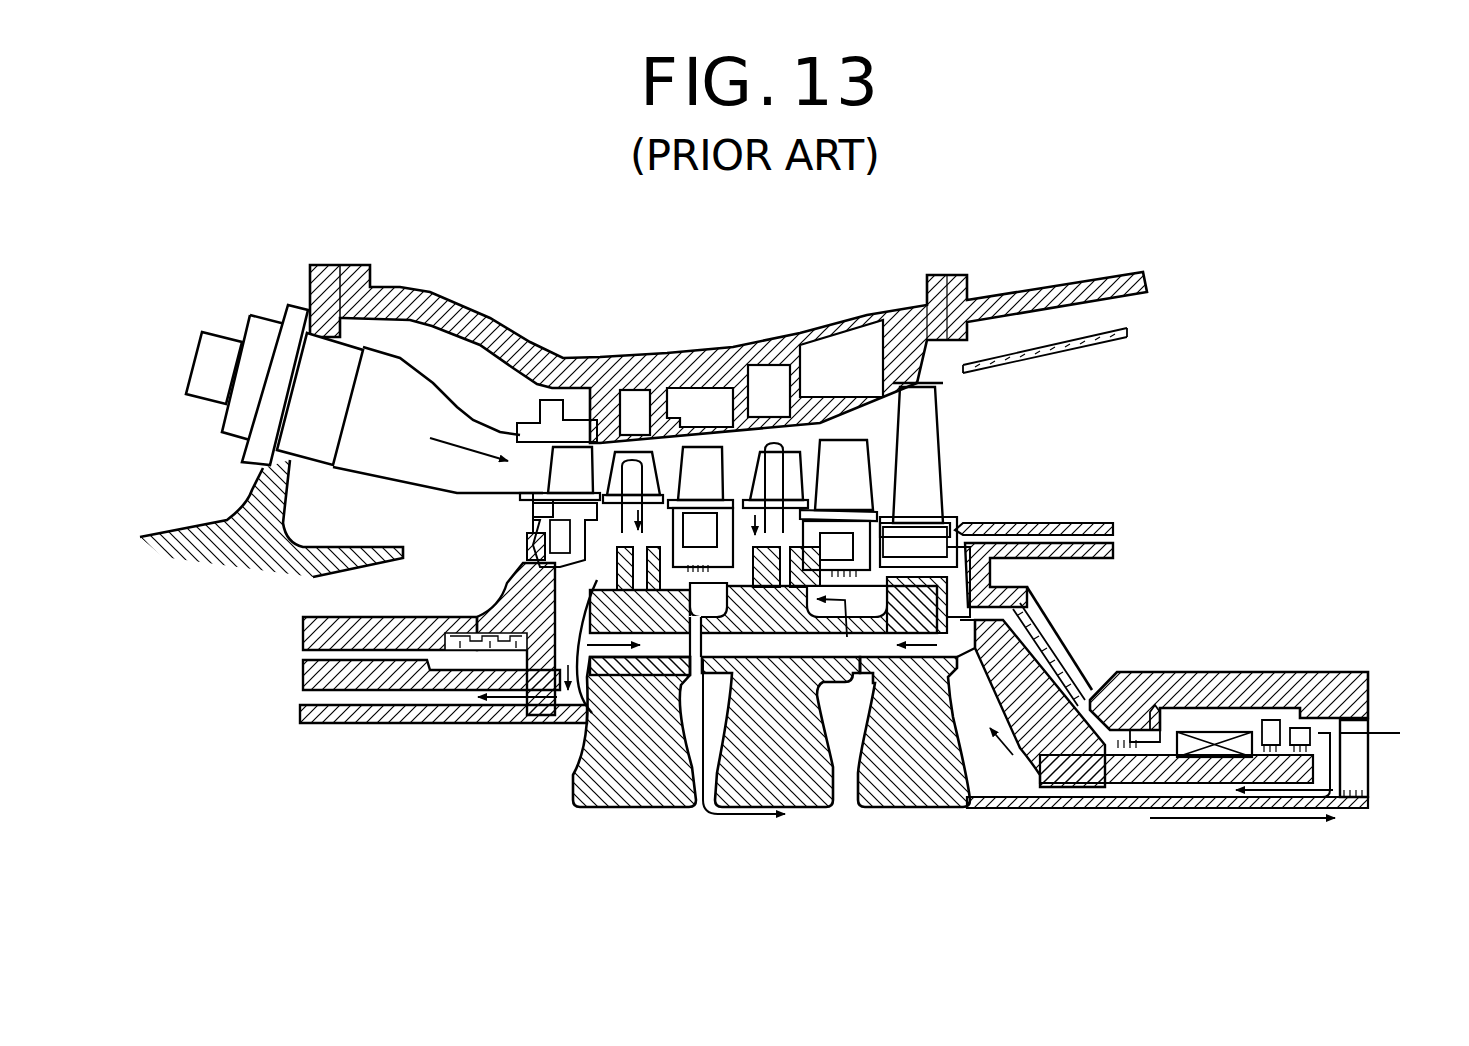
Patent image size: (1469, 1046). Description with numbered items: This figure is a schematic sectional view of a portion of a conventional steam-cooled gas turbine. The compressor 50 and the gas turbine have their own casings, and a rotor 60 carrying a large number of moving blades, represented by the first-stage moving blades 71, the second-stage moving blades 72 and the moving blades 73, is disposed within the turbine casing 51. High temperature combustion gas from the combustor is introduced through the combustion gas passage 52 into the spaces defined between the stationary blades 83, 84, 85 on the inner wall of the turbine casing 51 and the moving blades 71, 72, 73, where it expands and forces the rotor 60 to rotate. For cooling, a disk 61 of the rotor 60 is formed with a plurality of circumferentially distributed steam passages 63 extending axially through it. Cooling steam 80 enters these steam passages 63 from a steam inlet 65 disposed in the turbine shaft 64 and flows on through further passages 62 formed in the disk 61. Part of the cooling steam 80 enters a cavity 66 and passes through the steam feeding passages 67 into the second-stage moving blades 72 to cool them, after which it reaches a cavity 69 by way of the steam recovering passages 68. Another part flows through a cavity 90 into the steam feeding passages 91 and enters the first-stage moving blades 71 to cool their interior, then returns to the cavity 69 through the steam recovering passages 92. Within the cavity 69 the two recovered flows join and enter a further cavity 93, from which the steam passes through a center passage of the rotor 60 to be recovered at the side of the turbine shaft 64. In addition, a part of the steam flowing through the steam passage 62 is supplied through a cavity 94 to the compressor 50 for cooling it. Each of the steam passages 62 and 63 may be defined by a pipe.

The compressor casing 50 is at (188, 535).
The turbine casing 51 is at (414, 272).
The combustion gas passage 52 is at (447, 437).
The rotor 60 is at (550, 792).
The disk 61 is at (650, 778).
The steam passage 62 is at (763, 640).
The steam passage 63 is at (1105, 800).
The turbine shaft 64 is at (1262, 672).
The steam inlet 65 is at (1372, 720).
The cavity 66 is at (868, 610).
The steam feeding passage 67 is at (880, 510).
The steam recovering passage 68 is at (880, 490).
The cavity 69 is at (693, 597).
The first-stage moving blade 71 is at (624, 452).
The second-stage moving blade 72 is at (777, 445).
The moving blade 73 is at (917, 403).
The cooling steam 80 is at (1372, 735).
The stationary blade 83 is at (560, 507).
The stationary blade 84 is at (700, 509).
The stationary blade 85 is at (838, 508).
The cavity 90 is at (543, 587).
The steam feeding passage 91 is at (523, 557).
The steam recovering passage 92 is at (762, 620).
The cavity 93 is at (698, 812).
The cavity 94 is at (572, 727).